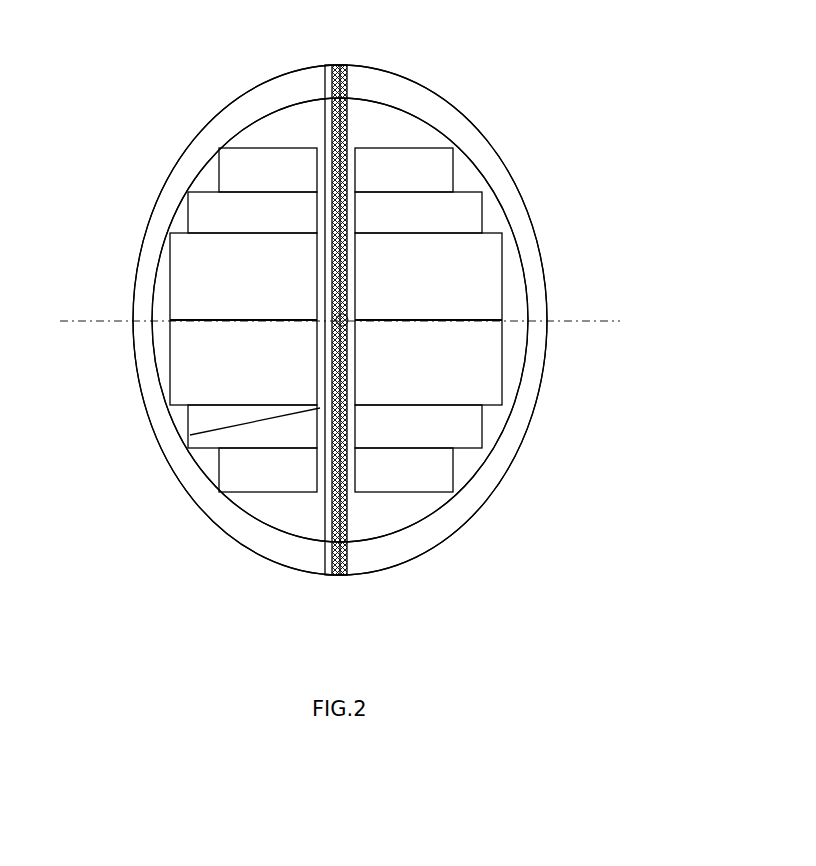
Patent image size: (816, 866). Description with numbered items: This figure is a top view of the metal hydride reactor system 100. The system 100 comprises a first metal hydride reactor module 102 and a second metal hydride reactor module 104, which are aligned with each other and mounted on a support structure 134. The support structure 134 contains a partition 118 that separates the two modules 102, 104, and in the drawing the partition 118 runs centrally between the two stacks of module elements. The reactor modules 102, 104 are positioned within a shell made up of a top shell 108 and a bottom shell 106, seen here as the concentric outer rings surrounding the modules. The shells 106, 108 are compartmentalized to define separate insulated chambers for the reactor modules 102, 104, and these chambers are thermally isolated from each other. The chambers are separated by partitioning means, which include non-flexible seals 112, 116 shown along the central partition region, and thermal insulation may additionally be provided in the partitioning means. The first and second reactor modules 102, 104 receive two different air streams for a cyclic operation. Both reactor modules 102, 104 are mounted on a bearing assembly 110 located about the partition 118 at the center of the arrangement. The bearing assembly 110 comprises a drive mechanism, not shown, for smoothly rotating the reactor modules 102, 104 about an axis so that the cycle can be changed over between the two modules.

The system 100 is at (560, 82).
The first metal hydride reactor module 102 is at (281, 168).
The second metal hydride reactor module 104 is at (412, 172).
The bottom shell 106 is at (533, 215).
The top shell 108 is at (340, 320).
The bearing assembly 110 is at (355, 325).
The non-flexible seal 112 is at (352, 448).
The non-flexible seal 116 is at (339, 320).
The partition 118 is at (330, 405).
The support structure 134 is at (148, 276).